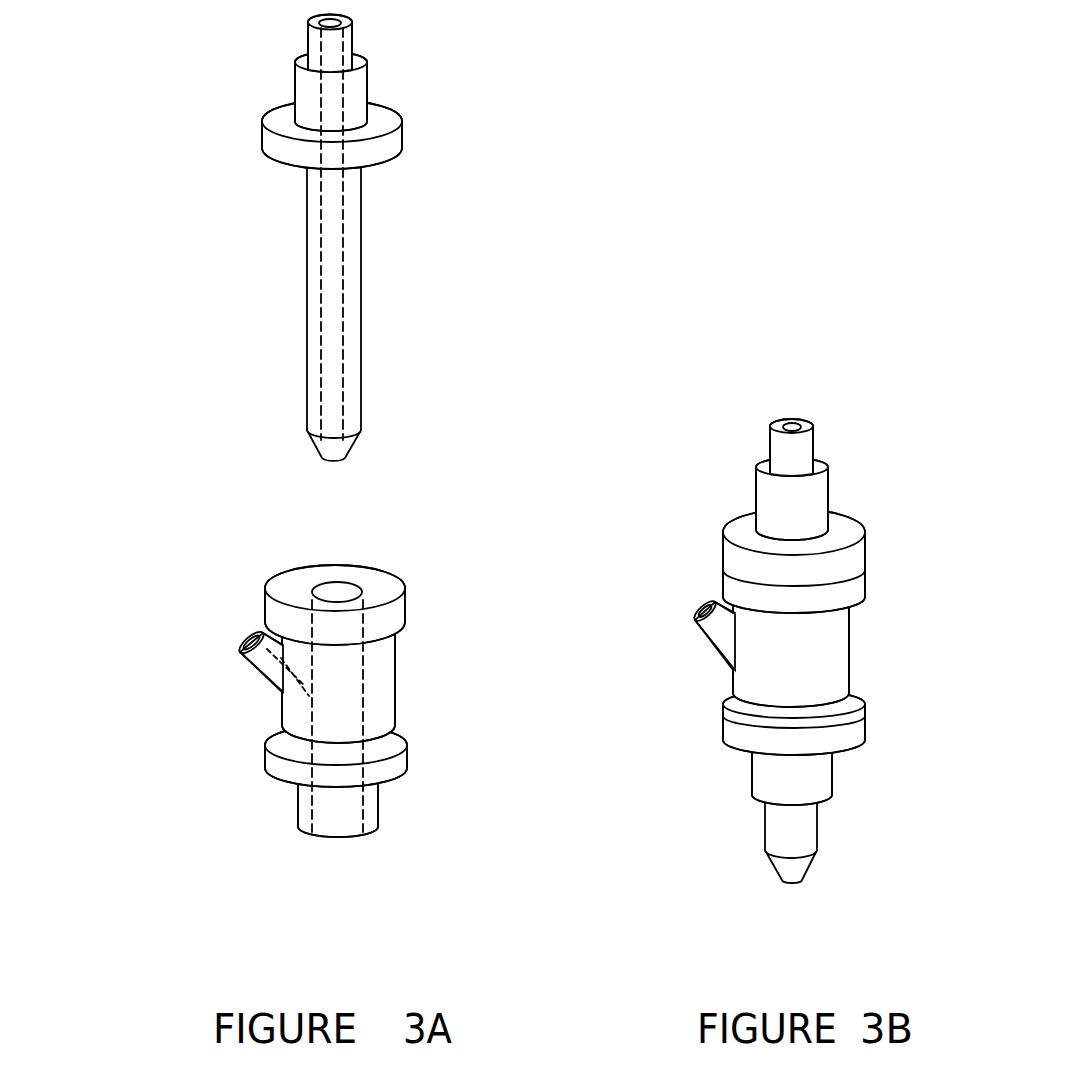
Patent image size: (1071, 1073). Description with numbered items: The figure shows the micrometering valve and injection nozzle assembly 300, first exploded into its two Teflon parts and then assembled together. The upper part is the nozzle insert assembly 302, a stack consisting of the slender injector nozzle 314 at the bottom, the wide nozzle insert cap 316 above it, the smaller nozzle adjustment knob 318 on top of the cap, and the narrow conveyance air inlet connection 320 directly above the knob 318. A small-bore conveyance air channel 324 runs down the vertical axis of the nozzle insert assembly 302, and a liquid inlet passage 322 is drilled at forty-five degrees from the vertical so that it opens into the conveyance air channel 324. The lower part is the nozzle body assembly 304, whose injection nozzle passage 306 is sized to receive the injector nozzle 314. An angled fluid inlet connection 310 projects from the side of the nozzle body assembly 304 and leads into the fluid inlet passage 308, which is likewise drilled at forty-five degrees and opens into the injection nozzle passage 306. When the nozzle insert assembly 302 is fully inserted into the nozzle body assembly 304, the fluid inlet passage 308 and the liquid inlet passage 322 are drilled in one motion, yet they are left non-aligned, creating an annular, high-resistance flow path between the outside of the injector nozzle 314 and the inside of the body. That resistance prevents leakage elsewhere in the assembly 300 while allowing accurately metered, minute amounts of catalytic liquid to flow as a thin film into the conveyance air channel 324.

In FIG. 3B, the micrometering valve and injection nozzle assembly 300 is at (769, 603).
In FIG. 3A, the nozzle insert assembly 302 is at (381, 238).
In FIG. 3A, the nozzle body assembly 304 is at (266, 701).
In FIG. 3A, the injection nozzle passage 306 is at (360, 817).
In FIG. 3A, the fluid inlet passage 308 is at (302, 700).
In FIG. 3A, the fluid inlet connection 310 is at (257, 670).
In FIG. 3B, the fluid inlet connection 310 is at (715, 648).
In FIG. 3A, the injector nozzle 314 is at (361, 344).
In FIG. 3A, the nozzle insert cap 316 is at (402, 135).
In FIG. 3A, the nozzle adjustment knob 318 is at (295, 86).
In FIG. 3A, the conveyance air inlet connection 320 is at (352, 42).
In FIG. 3B, the conveyance air inlet connection 320 is at (815, 447).
In FIG. 3A, the liquid inlet passage 322 is at (319, 297).
In FIG. 3A, the conveyance air channel 324 is at (330, 415).